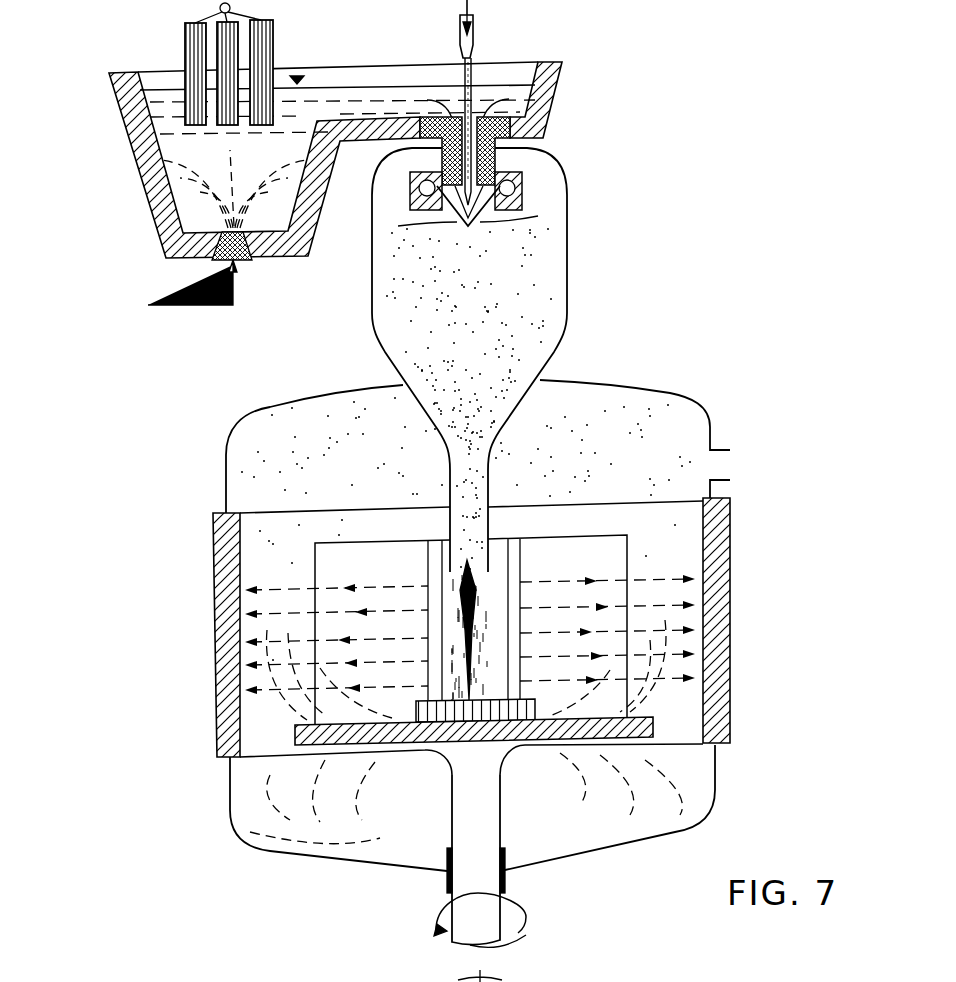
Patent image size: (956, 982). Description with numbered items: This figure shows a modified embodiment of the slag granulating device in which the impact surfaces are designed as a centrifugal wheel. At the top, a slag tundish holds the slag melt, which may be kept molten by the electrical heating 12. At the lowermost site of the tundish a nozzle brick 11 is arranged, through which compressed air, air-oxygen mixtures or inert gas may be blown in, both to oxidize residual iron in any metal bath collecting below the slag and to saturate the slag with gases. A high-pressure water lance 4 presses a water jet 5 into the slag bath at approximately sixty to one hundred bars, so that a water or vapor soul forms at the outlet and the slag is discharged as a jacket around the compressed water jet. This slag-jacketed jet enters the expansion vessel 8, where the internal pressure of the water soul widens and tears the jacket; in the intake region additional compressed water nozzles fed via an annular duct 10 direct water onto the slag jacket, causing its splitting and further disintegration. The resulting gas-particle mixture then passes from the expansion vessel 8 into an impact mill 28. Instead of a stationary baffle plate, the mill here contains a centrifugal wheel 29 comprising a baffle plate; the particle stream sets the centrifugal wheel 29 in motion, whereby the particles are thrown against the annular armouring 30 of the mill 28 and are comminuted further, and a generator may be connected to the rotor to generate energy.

The high-pressure water lance 4 is at (474, 40).
The water jet 5 is at (464, 72).
The expansion vessel 8 is at (568, 310).
The annular duct 10 is at (508, 185).
The nozzle brick 11 is at (248, 260).
The electrical heating 12 is at (260, 45).
The impact mill 28 is at (680, 398).
The centrifugal wheel 29 is at (348, 732).
The annular armouring 30 is at (248, 572).